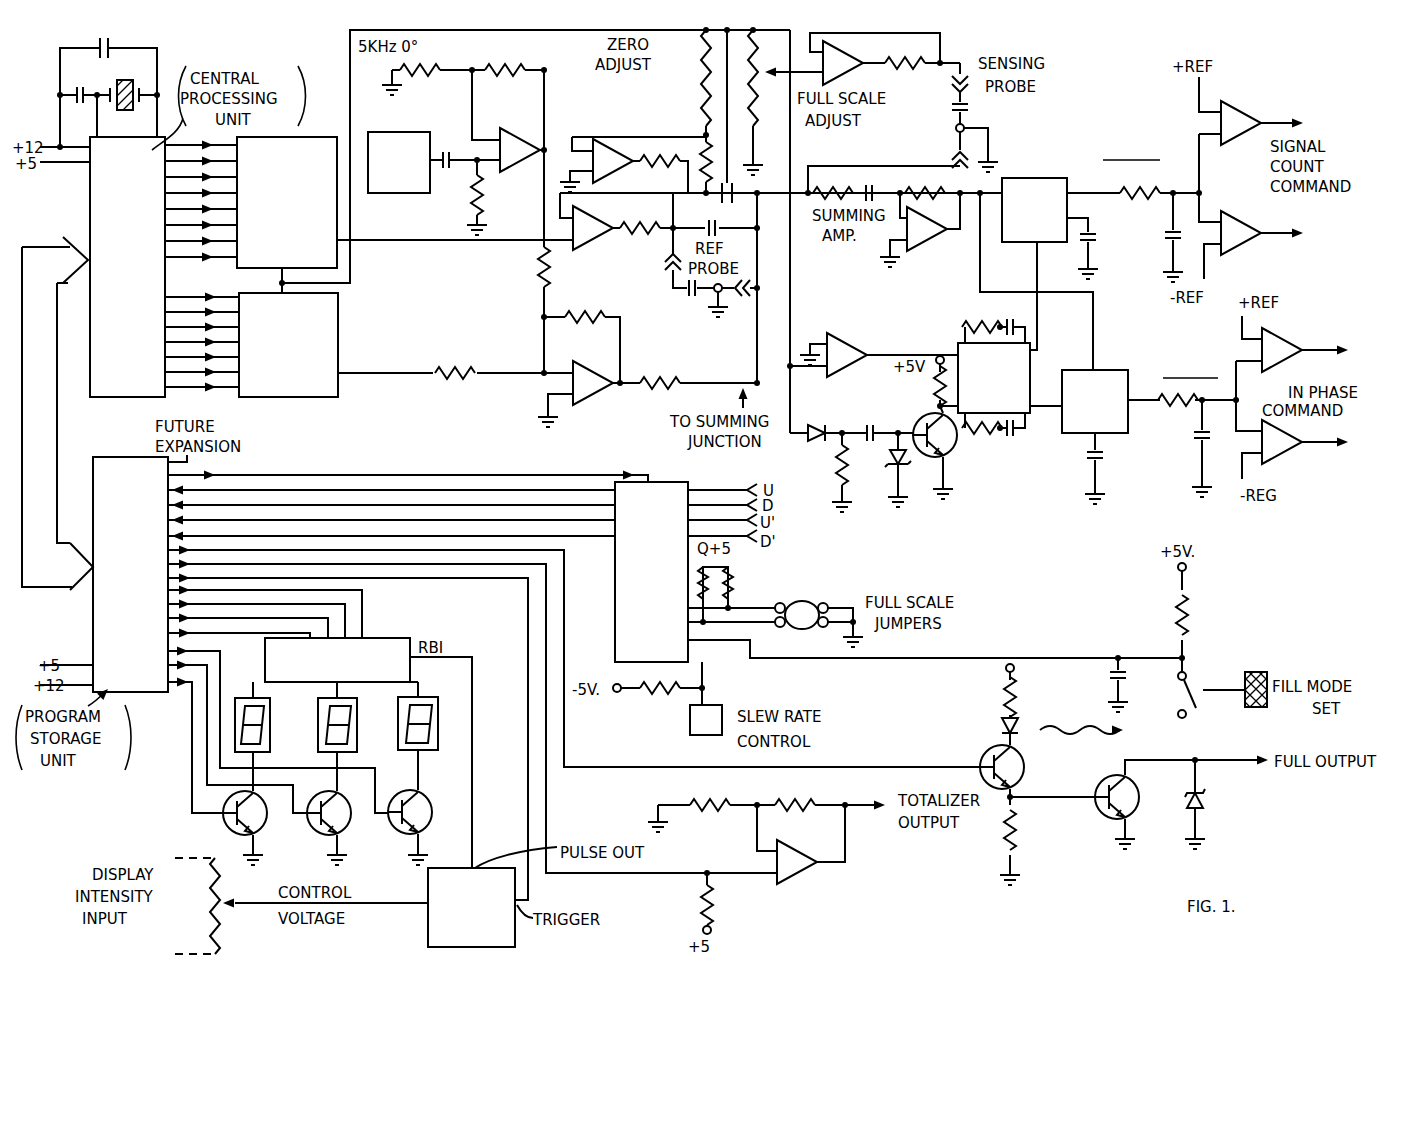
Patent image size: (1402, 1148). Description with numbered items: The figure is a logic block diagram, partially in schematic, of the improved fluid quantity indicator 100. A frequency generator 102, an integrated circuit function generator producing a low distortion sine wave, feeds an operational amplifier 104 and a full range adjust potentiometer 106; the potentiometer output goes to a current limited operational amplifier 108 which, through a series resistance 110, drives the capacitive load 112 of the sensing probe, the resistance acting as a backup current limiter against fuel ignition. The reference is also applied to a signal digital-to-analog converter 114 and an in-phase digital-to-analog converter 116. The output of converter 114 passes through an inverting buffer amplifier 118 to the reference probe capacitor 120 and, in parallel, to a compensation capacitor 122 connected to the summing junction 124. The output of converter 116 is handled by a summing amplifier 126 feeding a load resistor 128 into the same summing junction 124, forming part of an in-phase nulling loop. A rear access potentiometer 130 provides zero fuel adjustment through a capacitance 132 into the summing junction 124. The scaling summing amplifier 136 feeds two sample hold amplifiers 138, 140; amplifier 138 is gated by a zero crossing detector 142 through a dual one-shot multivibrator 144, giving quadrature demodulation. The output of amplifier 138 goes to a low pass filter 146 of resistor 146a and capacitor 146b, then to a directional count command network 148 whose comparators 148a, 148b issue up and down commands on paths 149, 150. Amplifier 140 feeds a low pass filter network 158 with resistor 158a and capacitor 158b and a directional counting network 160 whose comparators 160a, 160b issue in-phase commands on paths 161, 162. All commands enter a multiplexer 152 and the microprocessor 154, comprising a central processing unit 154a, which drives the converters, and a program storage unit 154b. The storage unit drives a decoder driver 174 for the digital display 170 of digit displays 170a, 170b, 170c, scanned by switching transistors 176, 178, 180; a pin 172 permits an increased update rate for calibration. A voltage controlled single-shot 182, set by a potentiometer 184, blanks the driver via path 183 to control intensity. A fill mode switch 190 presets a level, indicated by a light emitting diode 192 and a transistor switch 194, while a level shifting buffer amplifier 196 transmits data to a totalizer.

The fluid quantity indicator 100 is at (1068, 116).
The frequency generator 102 is at (400, 190).
The operational amplifier 104 is at (522, 118).
The full range adjust potentiometer 106 is at (762, 128).
The operational amplifier 108 is at (842, 59).
The series resistance 110 is at (905, 69).
The capacitive load 112 is at (956, 124).
The signal digital-to-analog converter 114 is at (310, 140).
The in-phase digital-to-analog converter 116 is at (310, 394).
The inverting buffer amplifier 118 is at (608, 230).
The capacitor 120 is at (688, 292).
The compensation capacitor 122 is at (715, 220).
The summing junction 124 is at (808, 200).
The summing amplifier 126 is at (589, 400).
The load resistor 128 is at (665, 389).
The rear access potentiometer 130 is at (712, 55).
The capacitance 132 is at (722, 164).
The scaling summing amplifier 136 is at (930, 242).
The sample hold amplifier 138 is at (1026, 178).
The sample hold amplifier 140 is at (1120, 356).
The zero crossing detector 142 is at (841, 352).
The dual one-shot multivibrator 144 is at (970, 352).
The low pass filter 146 is at (1160, 201).
The resistor 146a is at (1166, 186).
The capacitor 146b is at (1178, 246).
The directional count command providing network 148 is at (1213, 162).
The comparator 148a is at (1260, 91).
The comparator 148b is at (1252, 240).
The path 149 is at (1285, 122).
The path 150 is at (1287, 232).
The multiplexer 152 is at (663, 482).
The microprocessor 154 is at (122, 455).
The central processing unit 154a is at (90, 215).
The program storage unit 154b is at (105, 609).
The low pass filter network 158 is at (1184, 418).
The resistor 158a is at (1165, 392).
The capacitor 158b is at (1199, 446).
The directional counting network 160 is at (1262, 397).
The comparator 160a is at (1279, 341).
The comparator 160b is at (1290, 459).
The path 161 is at (1318, 350).
The path 162 is at (1322, 447).
The digital display 170 is at (340, 718).
The digit display 170a is at (272, 724).
The digit display 170b is at (357, 730).
The digit display 170c is at (438, 730).
The pin 172 is at (690, 723).
The binary coded decimal-to-7 segment decoder driver 174 is at (397, 640).
The switching transistor 176 is at (225, 830).
The switching transistor 178 is at (313, 838).
The switching transistor 180 is at (401, 838).
The voltage controlled variable pulse width single-shot 182 is at (515, 936).
The path 183 is at (473, 695).
The potentiometer 184 is at (225, 934).
The switch 190 is at (1258, 668).
The light emitting diode 192 is at (996, 753).
The transistor switch 194 is at (1106, 818).
The level shifting buffer amplifier 196 is at (803, 868).